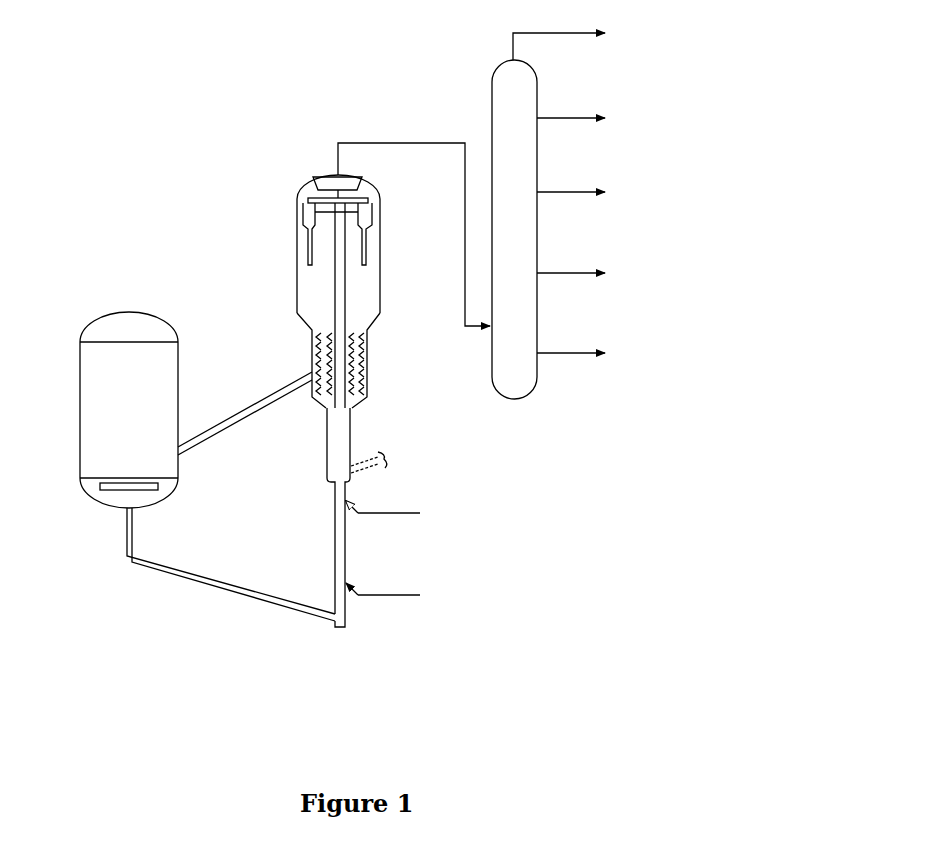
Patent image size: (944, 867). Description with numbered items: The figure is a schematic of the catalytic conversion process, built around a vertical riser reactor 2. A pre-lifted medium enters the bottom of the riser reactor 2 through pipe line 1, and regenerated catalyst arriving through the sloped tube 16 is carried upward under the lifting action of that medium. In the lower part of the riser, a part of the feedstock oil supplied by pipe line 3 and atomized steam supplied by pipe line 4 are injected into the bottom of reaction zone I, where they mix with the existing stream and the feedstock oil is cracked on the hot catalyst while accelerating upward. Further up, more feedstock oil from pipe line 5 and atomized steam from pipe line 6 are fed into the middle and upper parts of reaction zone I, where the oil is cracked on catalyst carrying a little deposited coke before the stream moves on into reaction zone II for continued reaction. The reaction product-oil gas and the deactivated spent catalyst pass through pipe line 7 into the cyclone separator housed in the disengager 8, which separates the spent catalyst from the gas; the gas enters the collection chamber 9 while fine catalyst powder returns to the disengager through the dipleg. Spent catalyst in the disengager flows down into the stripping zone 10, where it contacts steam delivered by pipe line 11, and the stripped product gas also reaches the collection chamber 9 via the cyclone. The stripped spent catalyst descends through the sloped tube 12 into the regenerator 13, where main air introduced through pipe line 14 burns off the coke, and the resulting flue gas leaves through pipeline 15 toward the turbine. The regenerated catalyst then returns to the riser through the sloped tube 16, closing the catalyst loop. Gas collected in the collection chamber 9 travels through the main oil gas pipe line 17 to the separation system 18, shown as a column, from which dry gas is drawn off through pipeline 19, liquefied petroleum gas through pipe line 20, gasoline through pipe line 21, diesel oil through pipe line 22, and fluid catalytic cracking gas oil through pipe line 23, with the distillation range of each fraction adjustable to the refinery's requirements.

The pipe line 1 is at (338, 630).
The riser reactor 2 is at (338, 558).
The pipe line 3 is at (407, 575).
The pipe line 4 is at (367, 597).
The pipe line 5 is at (407, 493).
The pipe line 6 is at (367, 515).
The pipe line 7 is at (340, 292).
The disengager 8 is at (338, 291).
The collection chamber 9 is at (337, 183).
The stripping zone 10 is at (360, 353).
The pipe line 11 is at (400, 407).
The sloped tube 12 is at (245, 413).
The regenerator 13 is at (129, 410).
The pipe line 14 is at (218, 487).
The pipeline 15 is at (129, 313).
The sloped tube 16 is at (231, 567).
The main oil gas pipe line 17 is at (414, 222).
The separation system 18 is at (514, 229).
The pipeline 19 is at (559, 36).
The pipe line 20 is at (571, 103).
The pipe line 21 is at (571, 170).
The pipe line 22 is at (571, 257).
The pipe line 23 is at (571, 337).
The reaction zone I is at (334, 523).
The reaction zone II is at (326, 451).